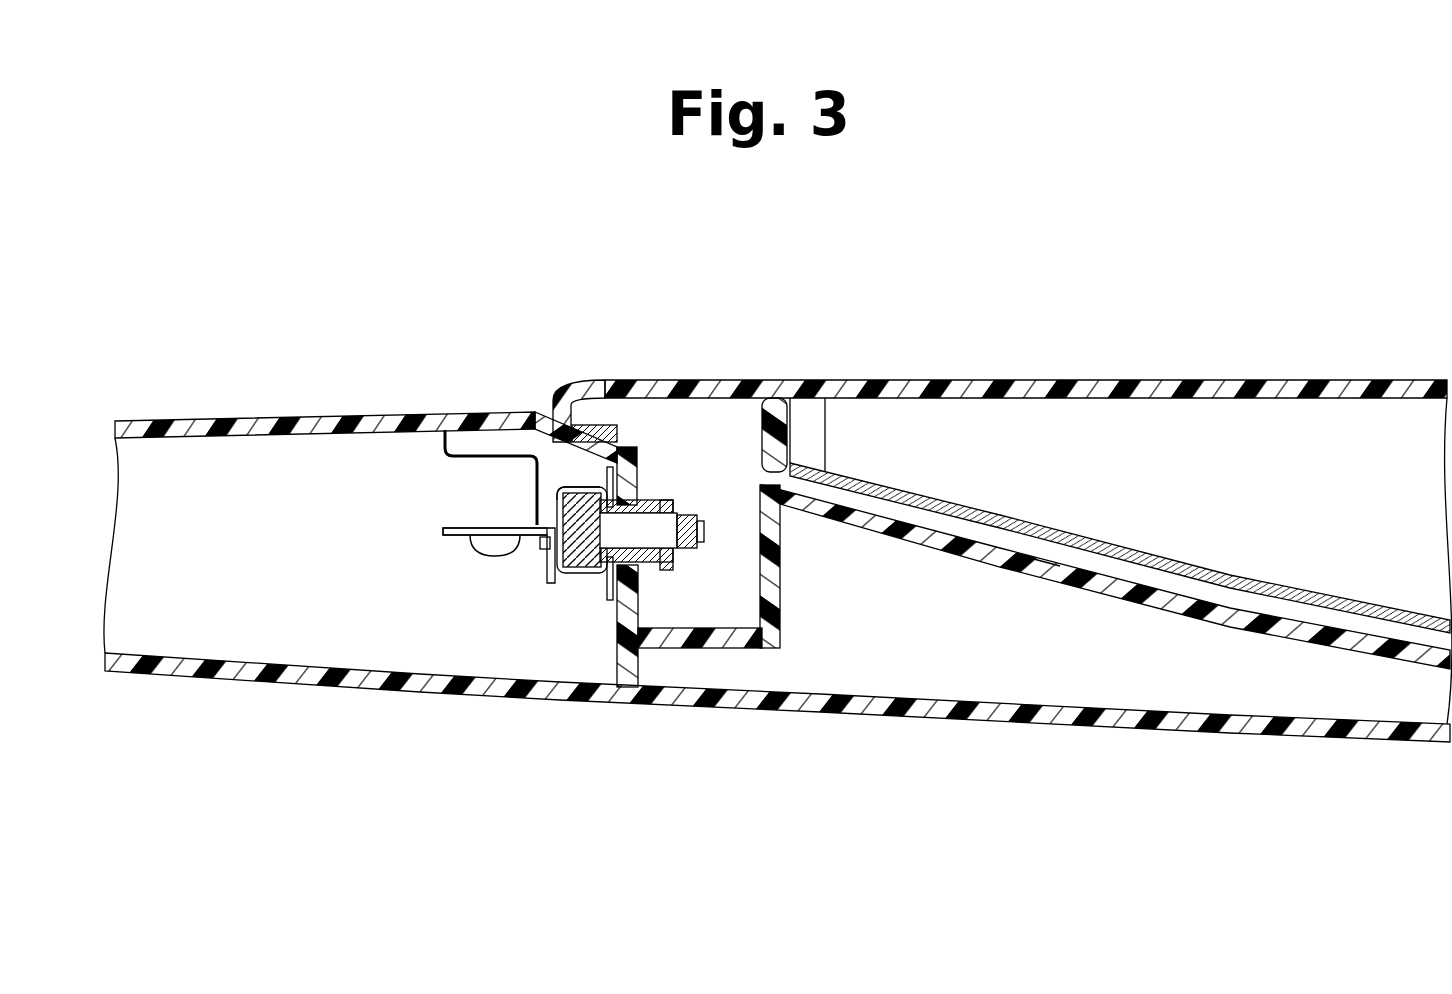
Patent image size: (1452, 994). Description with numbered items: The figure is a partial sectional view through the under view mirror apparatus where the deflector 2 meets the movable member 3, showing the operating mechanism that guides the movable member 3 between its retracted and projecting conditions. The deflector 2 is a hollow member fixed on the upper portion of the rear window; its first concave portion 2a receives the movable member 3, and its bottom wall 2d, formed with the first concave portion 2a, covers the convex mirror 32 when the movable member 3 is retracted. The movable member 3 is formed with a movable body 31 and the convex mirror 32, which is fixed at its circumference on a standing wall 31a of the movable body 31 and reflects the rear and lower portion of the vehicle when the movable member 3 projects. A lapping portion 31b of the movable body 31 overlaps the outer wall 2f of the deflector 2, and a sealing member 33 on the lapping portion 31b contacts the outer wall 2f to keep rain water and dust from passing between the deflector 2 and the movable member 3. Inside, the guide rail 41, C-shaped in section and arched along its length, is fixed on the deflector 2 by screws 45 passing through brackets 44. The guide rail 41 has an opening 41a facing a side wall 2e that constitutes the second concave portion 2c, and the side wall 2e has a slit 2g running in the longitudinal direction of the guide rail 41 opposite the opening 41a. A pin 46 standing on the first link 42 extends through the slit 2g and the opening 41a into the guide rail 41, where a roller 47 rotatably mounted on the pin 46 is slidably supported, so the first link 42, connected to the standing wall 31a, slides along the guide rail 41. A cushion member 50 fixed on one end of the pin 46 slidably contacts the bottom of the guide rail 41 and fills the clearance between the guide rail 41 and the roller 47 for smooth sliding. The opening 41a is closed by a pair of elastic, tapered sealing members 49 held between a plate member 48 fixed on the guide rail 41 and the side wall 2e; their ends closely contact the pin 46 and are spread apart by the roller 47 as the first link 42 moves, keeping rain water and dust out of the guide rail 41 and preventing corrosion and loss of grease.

The deflector 2 is at (290, 408).
The outer wall 2f is at (405, 416).
The slit 2g is at (638, 460).
The side wall 2e is at (625, 613).
The second concave portion 2c is at (708, 628).
The bottom wall 2d is at (1213, 618).
The first concave portion 2a is at (1045, 558).
The movable member 3 is at (1085, 372).
The movable body 31 is at (1250, 380).
The standing wall 31a is at (780, 400).
The lapping portion 31b is at (678, 388).
The convex mirror 32 is at (1155, 558).
The sealing member 33 is at (590, 428).
The guide rail 41 is at (576, 575).
The opening 41a is at (560, 487).
The first link 42 is at (697, 568).
The brackets 44 is at (487, 545).
The screws 45 is at (470, 540).
The pin 46 is at (650, 525).
The roller 47 is at (557, 575).
The plate member 48 is at (611, 467).
The sealing members 49 is at (628, 500).
The cushion member 50 is at (555, 548).